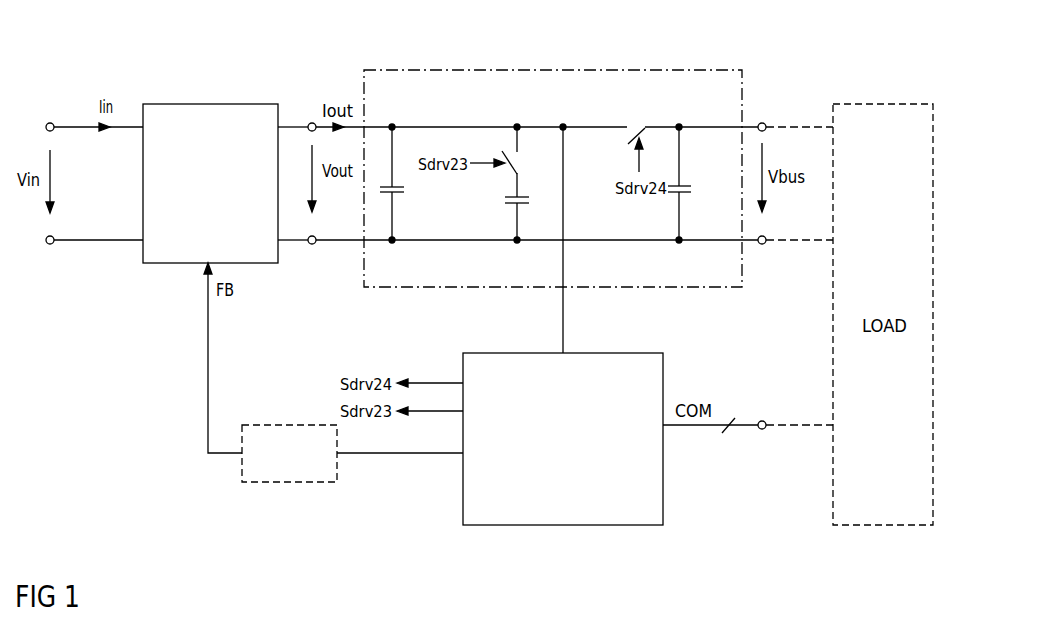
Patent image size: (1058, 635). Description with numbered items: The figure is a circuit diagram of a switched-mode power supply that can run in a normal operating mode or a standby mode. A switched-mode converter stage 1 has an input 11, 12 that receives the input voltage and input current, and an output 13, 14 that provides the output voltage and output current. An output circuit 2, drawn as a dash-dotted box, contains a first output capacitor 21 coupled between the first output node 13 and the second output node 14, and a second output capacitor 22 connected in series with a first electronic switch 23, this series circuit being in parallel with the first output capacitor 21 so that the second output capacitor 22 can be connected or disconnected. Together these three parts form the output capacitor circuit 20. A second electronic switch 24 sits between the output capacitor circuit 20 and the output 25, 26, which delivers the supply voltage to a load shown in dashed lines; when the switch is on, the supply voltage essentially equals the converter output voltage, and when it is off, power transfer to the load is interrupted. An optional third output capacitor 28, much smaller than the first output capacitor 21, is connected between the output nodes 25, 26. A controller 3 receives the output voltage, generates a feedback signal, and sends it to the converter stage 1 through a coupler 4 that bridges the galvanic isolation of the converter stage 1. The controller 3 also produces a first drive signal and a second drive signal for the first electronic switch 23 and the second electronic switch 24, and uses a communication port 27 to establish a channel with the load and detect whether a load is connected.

The converter stage 1 is at (216, 228).
The output circuit 2 is at (562, 70).
The controller 3 is at (571, 456).
The coupler 4 is at (298, 425).
The input 11 is at (50, 116).
The input 12 is at (50, 252).
The first output node 13 is at (309, 116).
The second output node 14 is at (312, 252).
The output capacitor circuit 20 is at (460, 115).
The first output capacitor 21 is at (405, 183).
The second output capacitor 22 is at (528, 216).
The first electronic switch 23 is at (526, 162).
The second electronic switch 24 is at (653, 121).
The output 25 is at (761, 116).
The output 26 is at (761, 254).
The communication port 27 is at (763, 415).
The third output capacitor 28 is at (692, 183).